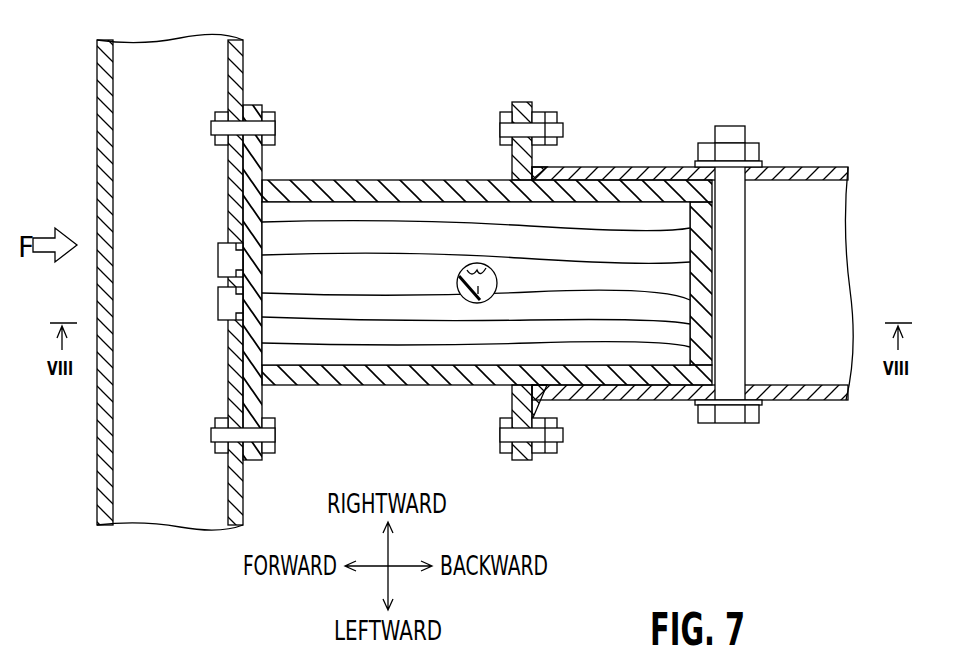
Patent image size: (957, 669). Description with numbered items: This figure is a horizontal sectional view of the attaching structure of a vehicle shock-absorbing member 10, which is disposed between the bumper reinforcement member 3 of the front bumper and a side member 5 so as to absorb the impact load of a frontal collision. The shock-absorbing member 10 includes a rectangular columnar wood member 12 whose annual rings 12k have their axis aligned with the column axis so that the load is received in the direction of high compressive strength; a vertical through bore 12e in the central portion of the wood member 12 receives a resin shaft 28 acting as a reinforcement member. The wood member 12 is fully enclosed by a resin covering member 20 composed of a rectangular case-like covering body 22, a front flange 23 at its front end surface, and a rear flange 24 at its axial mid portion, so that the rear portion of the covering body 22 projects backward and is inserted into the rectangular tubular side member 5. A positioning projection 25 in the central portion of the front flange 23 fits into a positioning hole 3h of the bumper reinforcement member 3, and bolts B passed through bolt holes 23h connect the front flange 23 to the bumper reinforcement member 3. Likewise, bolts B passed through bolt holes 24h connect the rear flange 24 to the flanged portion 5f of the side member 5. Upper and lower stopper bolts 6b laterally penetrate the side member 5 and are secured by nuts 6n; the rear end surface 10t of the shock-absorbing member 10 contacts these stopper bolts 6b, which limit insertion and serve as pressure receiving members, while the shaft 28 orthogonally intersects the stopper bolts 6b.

The bumper reinforcement member 3 is at (92, 175).
The positioning hole 3h is at (218, 255).
The positioning projection 25 is at (232, 300).
The front flange 23 is at (256, 398).
The bolt hole 23h is at (258, 440).
The bolt B is at (358, 282).
The covering member 20 is at (348, 176).
The wood member 12 is at (476, 290).
The through bore 12e is at (458, 282).
The annual rings 12k is at (628, 305).
The resin shaft 28 is at (478, 302).
The covering body 22 is at (584, 190).
The rear flange 24 is at (520, 158).
The bolt hole 24h is at (525, 442).
The flanged portion 5f is at (558, 285).
The side member 5 is at (799, 165).
The nut 6n is at (731, 130).
The stopper bolt 6b is at (729, 410).
The vehicle shock-absorbing member 10 is at (427, 126).
The rear end surface 10t is at (715, 275).